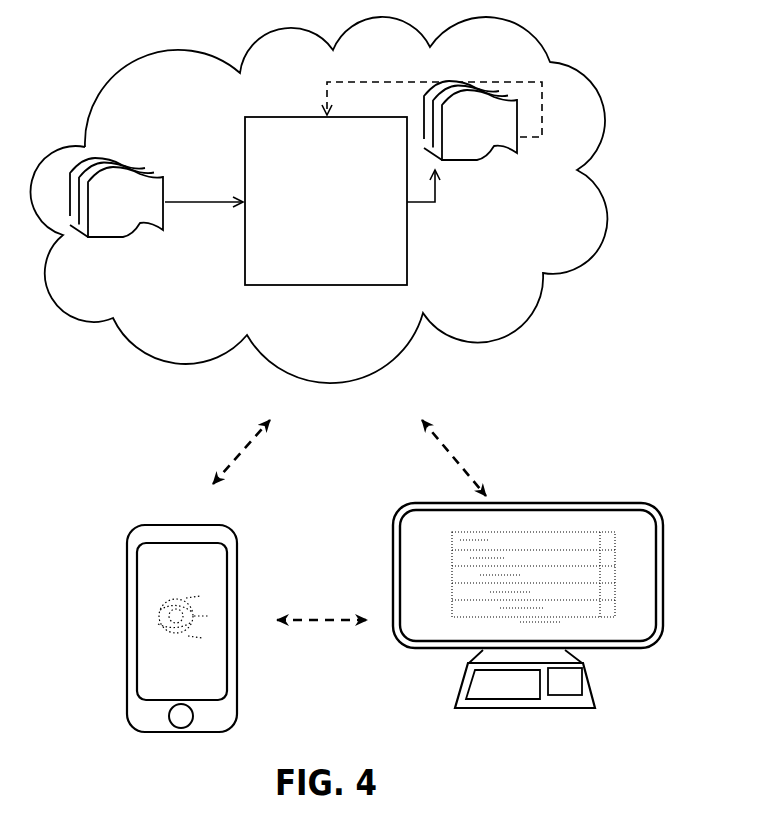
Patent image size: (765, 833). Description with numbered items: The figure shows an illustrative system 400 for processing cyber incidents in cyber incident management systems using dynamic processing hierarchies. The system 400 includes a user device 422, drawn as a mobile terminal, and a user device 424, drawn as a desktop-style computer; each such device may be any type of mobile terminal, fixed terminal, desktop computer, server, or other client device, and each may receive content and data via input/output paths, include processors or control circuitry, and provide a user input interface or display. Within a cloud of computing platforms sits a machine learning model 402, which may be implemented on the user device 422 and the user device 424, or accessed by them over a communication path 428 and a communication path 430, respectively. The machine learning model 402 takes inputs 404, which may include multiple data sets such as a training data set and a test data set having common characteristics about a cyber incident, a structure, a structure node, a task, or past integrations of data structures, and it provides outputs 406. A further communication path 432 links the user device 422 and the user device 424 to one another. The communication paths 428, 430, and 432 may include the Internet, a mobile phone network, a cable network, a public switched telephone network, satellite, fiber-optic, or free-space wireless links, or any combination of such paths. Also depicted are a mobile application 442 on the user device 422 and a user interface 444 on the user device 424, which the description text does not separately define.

The system 400 is at (345, 16).
The machine learning model 402 is at (307, 231).
The inputs 404 is at (134, 156).
The outputs 406 is at (505, 164).
The user device 422 is at (177, 502).
The user device 424 is at (528, 522).
The communication path 428 is at (222, 431).
The communication path 430 is at (449, 429).
The communication path 432 is at (314, 596).
The mobile application 442 is at (214, 579).
The desktop application / user interface 444 is at (570, 527).